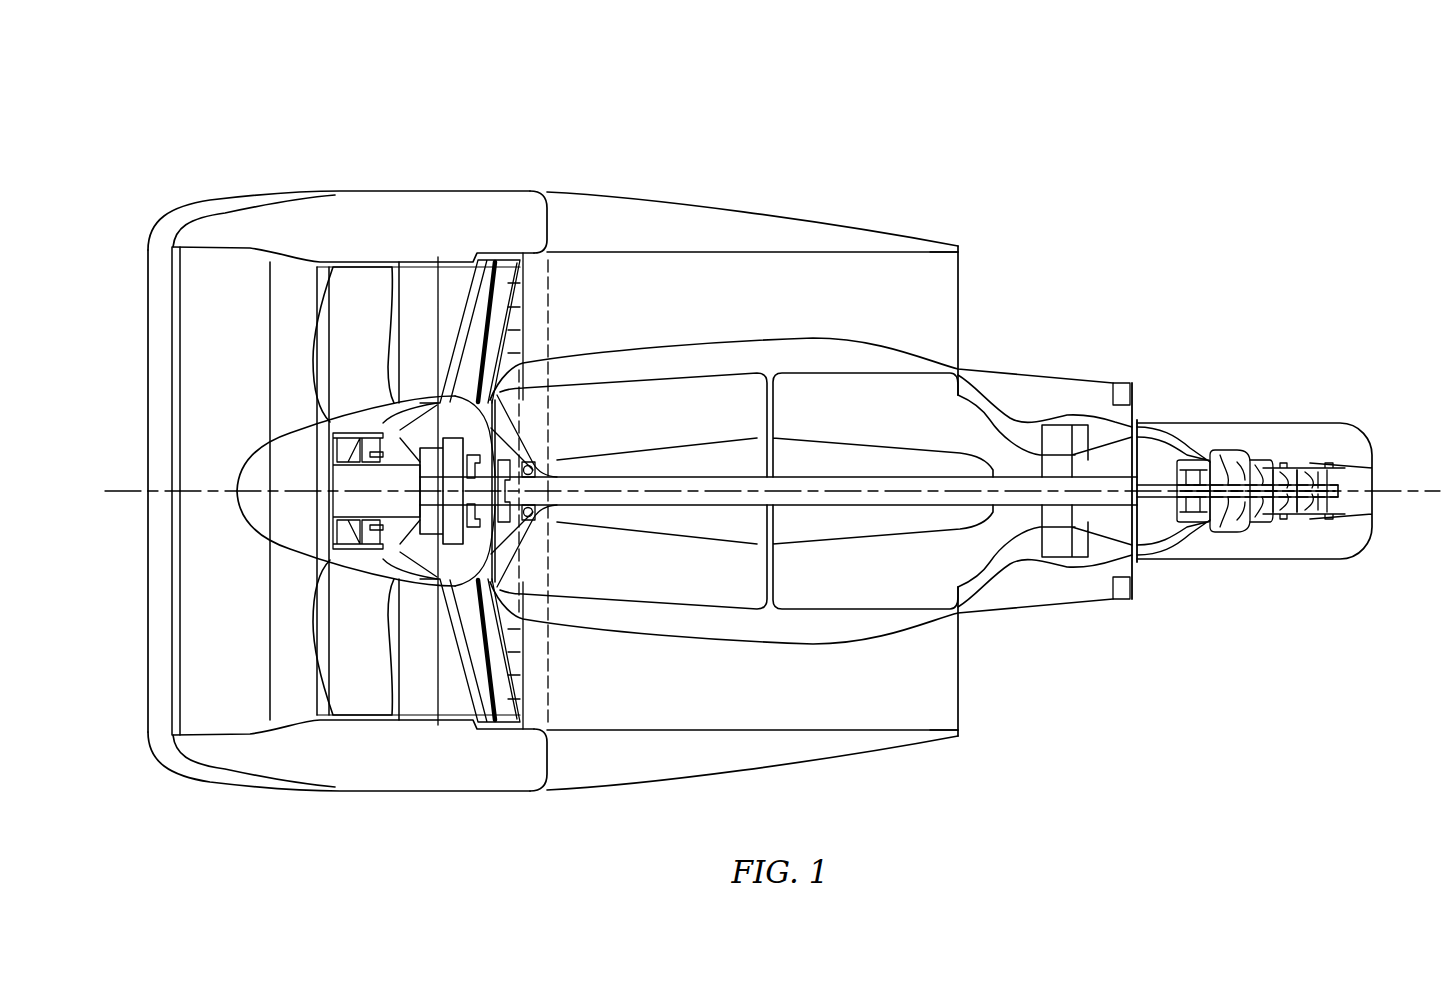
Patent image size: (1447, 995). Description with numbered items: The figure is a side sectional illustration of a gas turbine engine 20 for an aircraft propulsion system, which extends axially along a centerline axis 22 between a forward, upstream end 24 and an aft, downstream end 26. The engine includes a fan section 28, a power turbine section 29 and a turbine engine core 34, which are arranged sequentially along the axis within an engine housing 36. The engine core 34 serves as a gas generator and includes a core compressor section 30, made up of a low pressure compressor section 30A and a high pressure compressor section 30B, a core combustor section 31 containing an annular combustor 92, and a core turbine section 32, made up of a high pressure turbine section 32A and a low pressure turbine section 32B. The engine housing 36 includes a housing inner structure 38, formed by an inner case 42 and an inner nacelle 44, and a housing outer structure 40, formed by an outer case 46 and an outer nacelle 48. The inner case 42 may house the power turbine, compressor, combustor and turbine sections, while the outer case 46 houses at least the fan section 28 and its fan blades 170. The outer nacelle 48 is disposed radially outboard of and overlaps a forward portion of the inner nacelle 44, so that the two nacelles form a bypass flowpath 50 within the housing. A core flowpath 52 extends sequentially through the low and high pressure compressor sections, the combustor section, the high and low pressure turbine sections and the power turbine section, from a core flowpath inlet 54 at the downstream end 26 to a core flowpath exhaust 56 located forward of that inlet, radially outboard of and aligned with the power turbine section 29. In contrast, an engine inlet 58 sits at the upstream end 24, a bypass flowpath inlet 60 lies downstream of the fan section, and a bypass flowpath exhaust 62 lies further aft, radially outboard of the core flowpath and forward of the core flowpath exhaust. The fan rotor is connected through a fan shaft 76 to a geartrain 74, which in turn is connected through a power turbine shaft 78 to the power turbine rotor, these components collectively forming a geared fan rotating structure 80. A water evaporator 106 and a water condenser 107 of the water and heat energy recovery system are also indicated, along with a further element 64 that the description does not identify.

The gas turbine engine 20 is at (759, 417).
The centerline axis 22 is at (112, 523).
The forward upstream end 24 is at (148, 352).
The aft downstream end 26 is at (1383, 440).
The fan section 28 is at (344, 491).
The power turbine section 29 is at (1113, 402).
The core compressor section 30 is at (1311, 390).
The low pressure compressor section 30A is at (1312, 464).
The high pressure compressor section 30B is at (1255, 469).
The core combustor section 31 is at (1234, 456).
The core turbine section 32 is at (1204, 397).
The high pressure turbine section 32A is at (1212, 456).
The low pressure turbine section 32B is at (1191, 456).
The turbine engine core 34 is at (1261, 461).
The engine housing 36 is at (852, 455).
The housing inner structure 38 is at (1003, 367).
The housing outer structure 40 is at (668, 199).
The inner case 42 is at (1097, 580).
The inner nacelle 44 is at (985, 620).
The outer case 46 is at (432, 257).
The outer nacelle 48 is at (565, 191).
The bypass flowpath 50 is at (638, 297).
The core flowpath 52 is at (1004, 413).
The core flowpath inlet 54 is at (1372, 470).
The core flowpath exhaust 56 is at (1132, 383).
The engine inlet 58 is at (158, 405).
The bypass flowpath inlet 60 is at (398, 410).
The bypass flowpath exhaust 62 is at (960, 280).
The bypass nozzle exit 64 is at (1130, 226).
The geartrain 74 is at (455, 540).
The fan shaft 76 is at (384, 522).
The power turbine shaft 78 is at (667, 505).
The fan rotating structure 80 is at (308, 567).
The combustor 92 is at (1213, 527).
The water evaporator 106 is at (861, 592).
The water condenser 107 is at (732, 614).
The fan blades 170 is at (320, 292).